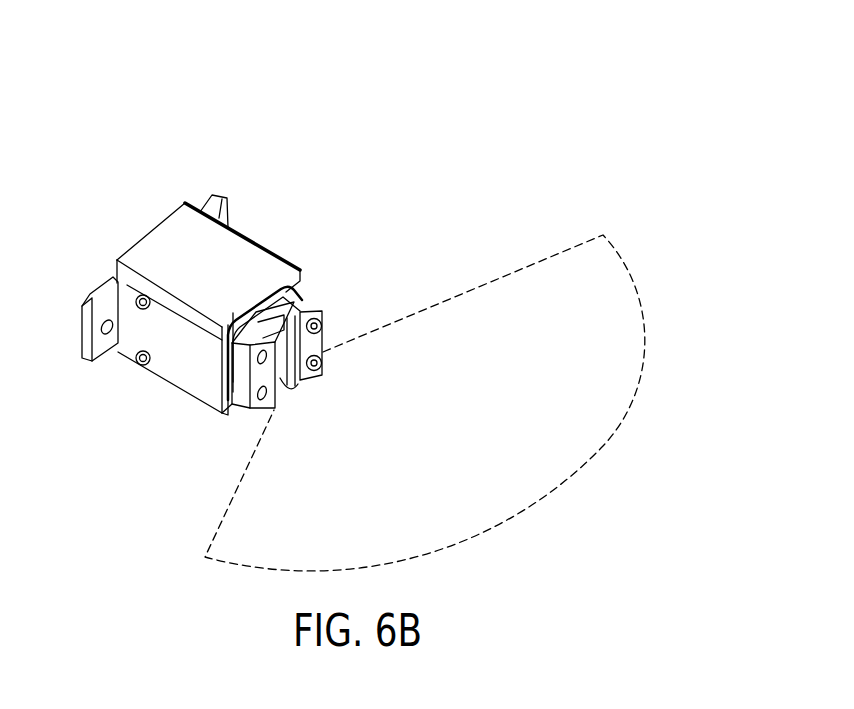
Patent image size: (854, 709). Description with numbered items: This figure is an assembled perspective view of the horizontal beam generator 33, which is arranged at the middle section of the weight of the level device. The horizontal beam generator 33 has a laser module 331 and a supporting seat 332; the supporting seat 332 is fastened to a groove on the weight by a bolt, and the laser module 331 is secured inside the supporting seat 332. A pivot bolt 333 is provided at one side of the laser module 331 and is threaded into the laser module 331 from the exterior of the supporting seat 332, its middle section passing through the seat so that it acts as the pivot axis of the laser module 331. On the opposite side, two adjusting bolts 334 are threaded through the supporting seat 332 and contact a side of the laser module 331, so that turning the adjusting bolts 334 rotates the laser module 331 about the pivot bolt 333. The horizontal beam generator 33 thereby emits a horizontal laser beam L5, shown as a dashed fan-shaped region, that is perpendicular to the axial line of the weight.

The horizontal beam generator 33 is at (137, 205).
The laser module 331 is at (260, 405).
The supporting seat 332 is at (235, 250).
The pivot bolt 333 is at (308, 292).
The adjusting bolts 334 is at (138, 297).
The horizontal laser beam L5 is at (604, 447).